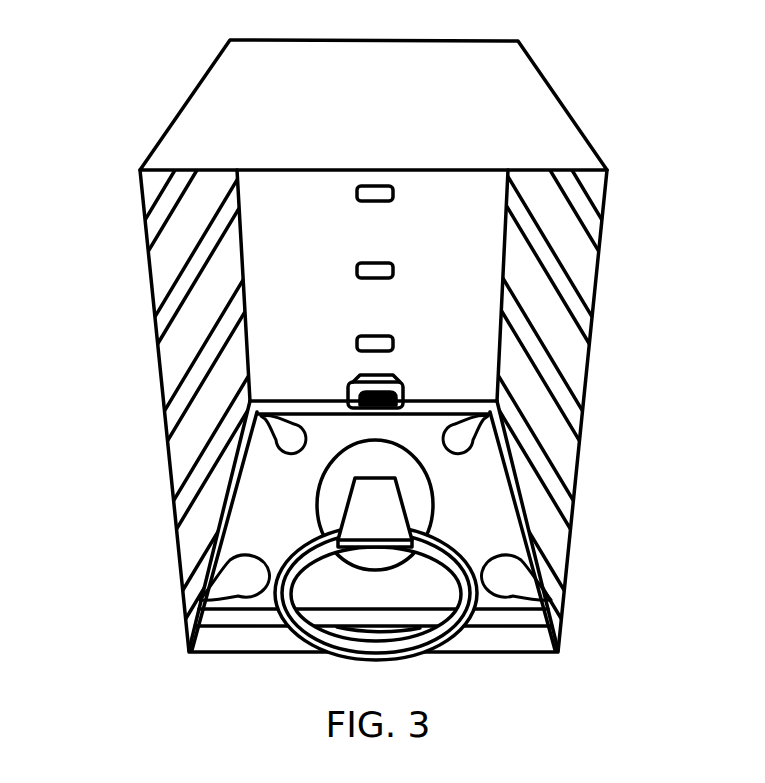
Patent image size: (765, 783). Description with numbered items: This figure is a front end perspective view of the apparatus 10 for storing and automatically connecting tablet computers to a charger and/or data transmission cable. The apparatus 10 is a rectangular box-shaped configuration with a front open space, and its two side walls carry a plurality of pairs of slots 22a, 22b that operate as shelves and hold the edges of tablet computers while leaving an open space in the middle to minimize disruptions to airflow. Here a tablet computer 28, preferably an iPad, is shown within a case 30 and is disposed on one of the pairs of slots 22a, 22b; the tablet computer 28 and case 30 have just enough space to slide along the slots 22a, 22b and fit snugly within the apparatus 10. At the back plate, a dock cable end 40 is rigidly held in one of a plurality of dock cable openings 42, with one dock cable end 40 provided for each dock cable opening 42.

The apparatus 10 is at (240, 130).
The slots 22a is at (557, 606).
The slots 22b is at (195, 598).
The tablet computer 28 is at (237, 628).
The case 30 is at (255, 540).
The dock cable end 40 is at (403, 397).
The dock cable openings 42 is at (357, 194).